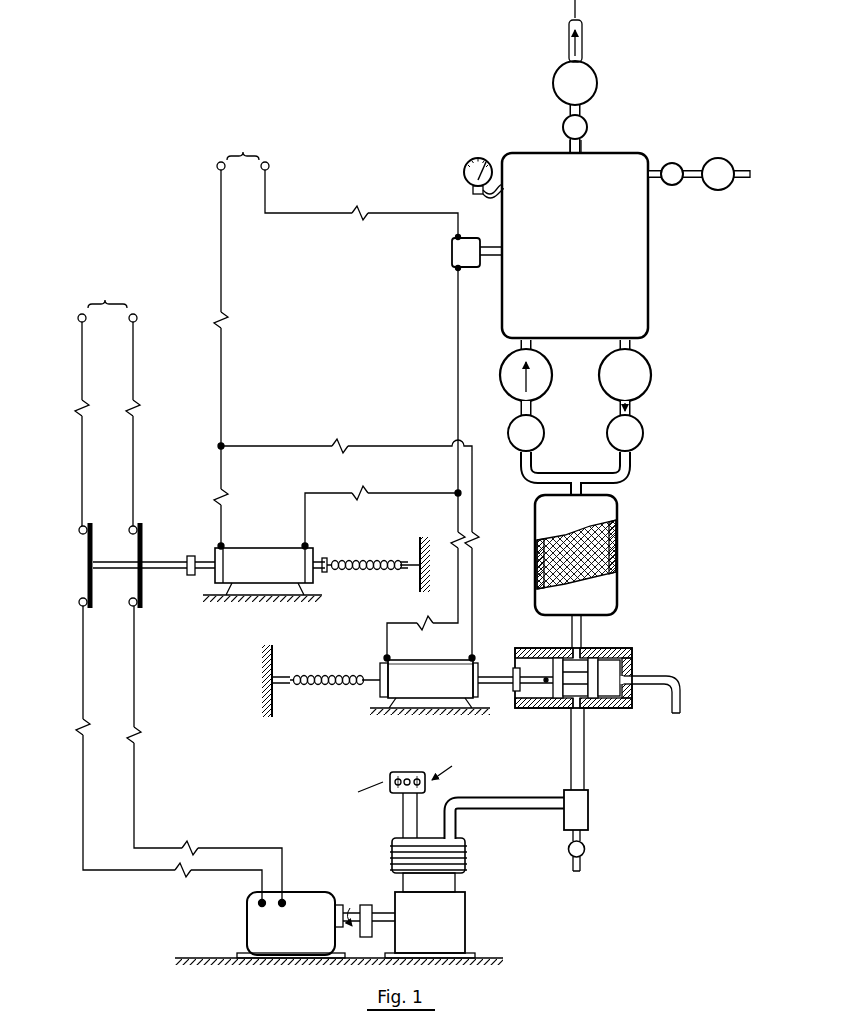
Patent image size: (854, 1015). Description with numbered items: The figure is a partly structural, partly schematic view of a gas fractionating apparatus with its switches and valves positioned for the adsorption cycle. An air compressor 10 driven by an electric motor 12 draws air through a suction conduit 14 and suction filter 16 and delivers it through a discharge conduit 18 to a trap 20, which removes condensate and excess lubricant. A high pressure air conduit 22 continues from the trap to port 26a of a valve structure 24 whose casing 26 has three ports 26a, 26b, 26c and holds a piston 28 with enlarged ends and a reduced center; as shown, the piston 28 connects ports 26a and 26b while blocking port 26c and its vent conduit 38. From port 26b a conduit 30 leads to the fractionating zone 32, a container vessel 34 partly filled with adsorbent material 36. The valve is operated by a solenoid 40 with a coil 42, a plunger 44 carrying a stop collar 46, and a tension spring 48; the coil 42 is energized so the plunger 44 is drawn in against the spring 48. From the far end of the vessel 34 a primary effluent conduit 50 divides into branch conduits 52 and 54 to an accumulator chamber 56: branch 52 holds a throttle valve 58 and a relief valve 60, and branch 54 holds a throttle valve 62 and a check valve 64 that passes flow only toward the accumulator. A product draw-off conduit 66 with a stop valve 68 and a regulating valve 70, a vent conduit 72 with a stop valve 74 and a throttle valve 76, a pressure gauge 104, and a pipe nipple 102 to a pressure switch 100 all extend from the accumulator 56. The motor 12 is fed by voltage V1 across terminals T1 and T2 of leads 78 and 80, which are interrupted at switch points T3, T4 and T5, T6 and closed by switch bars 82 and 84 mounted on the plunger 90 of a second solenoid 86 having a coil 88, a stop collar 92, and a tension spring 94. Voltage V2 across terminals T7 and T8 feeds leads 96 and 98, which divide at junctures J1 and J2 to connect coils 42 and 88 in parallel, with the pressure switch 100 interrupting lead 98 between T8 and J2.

The air compressor 10 is at (465, 882).
The electric motor 12 is at (306, 892).
The suction conduit 14 is at (402, 808).
The suction filter 16 is at (402, 772).
The discharge conduit 18 is at (477, 799).
The trap or separator 20 is at (589, 812).
The high pressure air conduit 22 is at (585, 770).
The valve structure 24 is at (641, 647).
The valve casing 26 is at (633, 668).
The port 26a is at (584, 708).
The port 26b is at (590, 648).
The port 26c is at (632, 692).
The valve piston 28 is at (522, 700).
The high pressure air supply and secondary effluent discharge conduit 30 is at (570, 636).
The fractionating zone 32 is at (637, 550).
The container vessel 34 is at (617, 560).
The adsorbent material 36 is at (618, 533).
The vent conduit 38 is at (683, 700).
The electric solenoid 40 is at (368, 700).
The coil member 42 is at (416, 660).
The plunger member 44 is at (490, 676).
The stop collar 46 is at (512, 690).
The tension spring 48 is at (292, 684).
The primary effluent discharge and reflux inlet conduit 50 is at (583, 487).
The branch conduit 52 is at (634, 470).
The branch conduit 54 is at (535, 470).
The accumulator chamber 56 is at (648, 277).
The throttle valve 58 is at (643, 430).
The relief valve 60 is at (648, 362).
The throttle valve 62 is at (509, 428).
The check valve 64 is at (505, 362).
The product draw-off conduit 66 is at (567, 148).
The stop valve 68 is at (589, 128).
The regulating valve 70 is at (596, 80).
The vent or bleed conduit 72 is at (661, 166).
The stop valve 74 is at (666, 184).
The throttle valve 76 is at (722, 190).
The motor lead 78 is at (82, 686).
The motor lead 80 is at (134, 686).
The switch bar 82 is at (86, 552).
The switch bar 84 is at (144, 536).
The electric solenoid 86 is at (322, 584).
The coil member 88 is at (248, 548).
The plunger member 90 is at (170, 570).
The stop collar 92 is at (190, 557).
The tension spring 94 is at (356, 562).
The main solenoid lead 96 is at (220, 255).
The main solenoid lead 98 is at (458, 322).
The pressure switch 100 is at (451, 252).
The pipe nipple 102 is at (485, 246).
The pressure gauge 104 is at (463, 170).
The terminal T1 is at (78, 318).
The terminal T2 is at (137, 318).
The switch point T3 is at (79, 530).
The switch point T4 is at (79, 603).
The switch point T5 is at (129, 530).
The switch point T6 is at (129, 606).
The terminal T7 is at (216, 166).
The terminal T8 is at (269, 166).
The voltage V1 is at (107, 293).
The voltage V2 is at (243, 145).
The juncture J1 is at (223, 446).
The juncture J2 is at (457, 491).